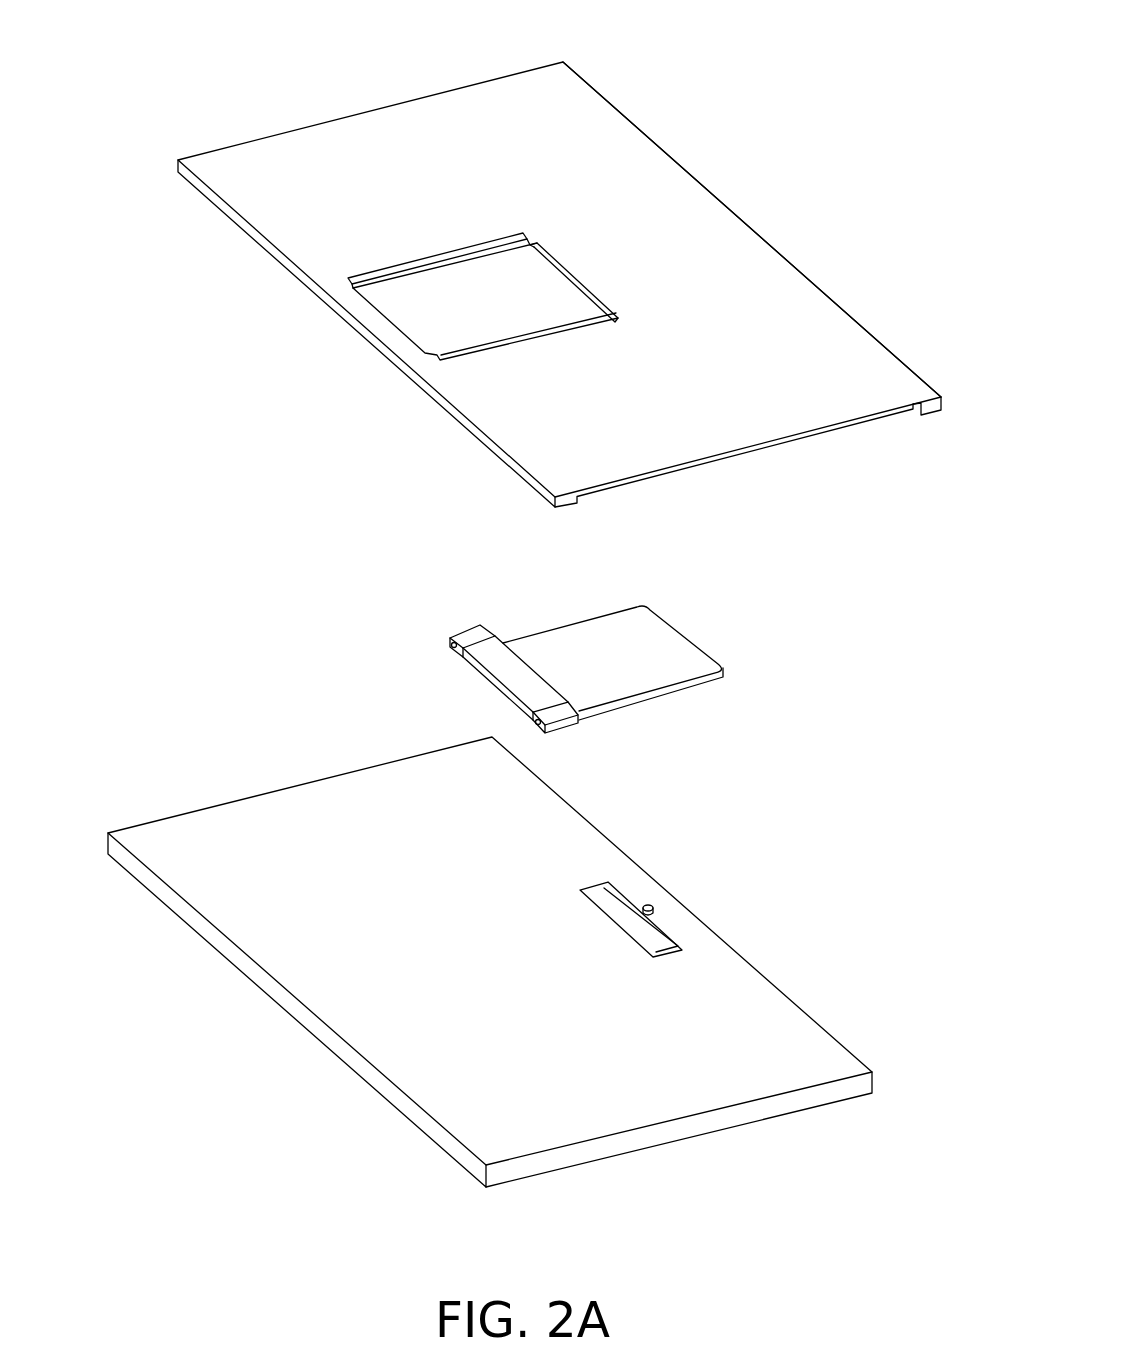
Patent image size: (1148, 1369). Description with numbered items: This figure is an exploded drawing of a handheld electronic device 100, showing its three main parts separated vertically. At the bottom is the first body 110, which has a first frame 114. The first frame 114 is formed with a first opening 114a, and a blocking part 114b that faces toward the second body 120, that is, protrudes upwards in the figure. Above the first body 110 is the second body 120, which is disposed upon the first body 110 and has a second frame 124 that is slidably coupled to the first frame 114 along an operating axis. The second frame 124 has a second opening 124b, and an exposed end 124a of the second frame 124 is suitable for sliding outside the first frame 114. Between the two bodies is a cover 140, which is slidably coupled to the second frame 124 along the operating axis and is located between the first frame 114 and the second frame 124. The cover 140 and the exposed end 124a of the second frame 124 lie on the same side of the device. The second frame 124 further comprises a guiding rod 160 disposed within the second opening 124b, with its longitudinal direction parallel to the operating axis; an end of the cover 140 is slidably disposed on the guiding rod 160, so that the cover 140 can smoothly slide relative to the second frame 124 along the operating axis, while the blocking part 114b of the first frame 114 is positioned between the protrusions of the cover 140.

The handheld electronic device 100 is at (524, 632).
The first body 110 is at (509, 962).
The first frame 114 is at (509, 962).
The first opening 114a is at (655, 942).
The blocking part 114b is at (657, 911).
The second body 120 is at (559, 253).
The second frame 124 is at (559, 253).
The exposed end 124a is at (644, 129).
The second opening 124b is at (467, 325).
The cover 140 is at (662, 643).
The guiding rod 160 is at (460, 262).